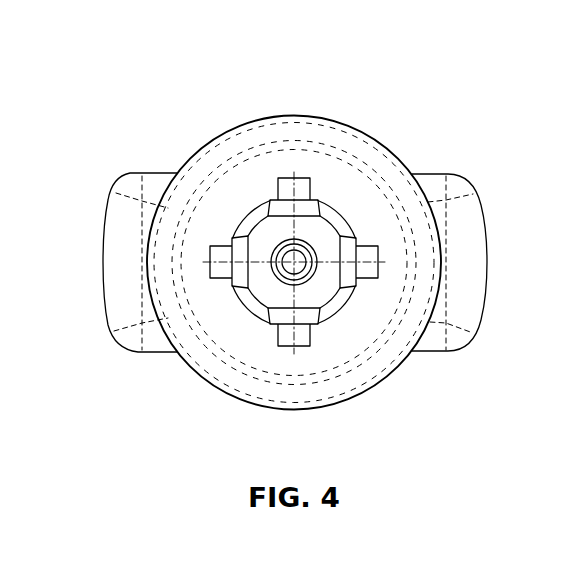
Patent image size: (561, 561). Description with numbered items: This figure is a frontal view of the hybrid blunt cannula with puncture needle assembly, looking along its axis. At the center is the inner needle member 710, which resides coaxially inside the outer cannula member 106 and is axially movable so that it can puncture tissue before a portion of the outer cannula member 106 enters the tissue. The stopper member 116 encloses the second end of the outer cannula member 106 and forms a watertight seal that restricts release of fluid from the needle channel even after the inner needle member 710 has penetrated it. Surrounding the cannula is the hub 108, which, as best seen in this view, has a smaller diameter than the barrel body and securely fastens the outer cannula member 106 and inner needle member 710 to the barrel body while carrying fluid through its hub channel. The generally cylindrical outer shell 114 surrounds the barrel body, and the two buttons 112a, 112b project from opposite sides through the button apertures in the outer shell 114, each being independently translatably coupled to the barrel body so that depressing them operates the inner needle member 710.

The outer shell 114 is at (289, 120).
The hub 108 is at (332, 207).
The outer cannula member 106 is at (278, 278).
The stopper member 116 is at (297, 263).
The inner needle member 710 is at (281, 251).
The button 112a is at (455, 186).
The button 112b is at (146, 190).